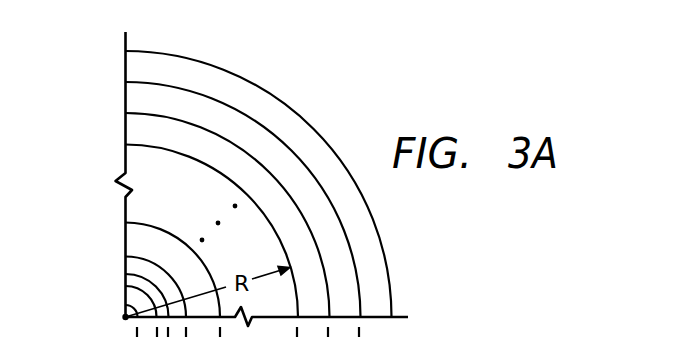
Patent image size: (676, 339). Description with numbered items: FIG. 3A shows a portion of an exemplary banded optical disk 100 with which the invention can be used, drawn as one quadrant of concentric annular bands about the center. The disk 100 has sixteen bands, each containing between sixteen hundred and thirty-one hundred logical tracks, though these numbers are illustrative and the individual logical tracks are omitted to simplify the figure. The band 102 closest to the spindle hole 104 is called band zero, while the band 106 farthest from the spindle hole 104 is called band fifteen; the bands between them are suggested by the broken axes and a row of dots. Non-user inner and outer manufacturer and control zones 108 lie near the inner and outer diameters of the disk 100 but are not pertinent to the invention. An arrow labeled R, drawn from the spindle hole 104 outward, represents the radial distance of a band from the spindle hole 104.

The banded disk 100 is at (281, 98).
The band zero 102 is at (127, 277).
The spindle hole 104 is at (123, 317).
The band fifteen 106 is at (128, 102).
The inner and outer manufacturer and control zones 108 is at (127, 297).